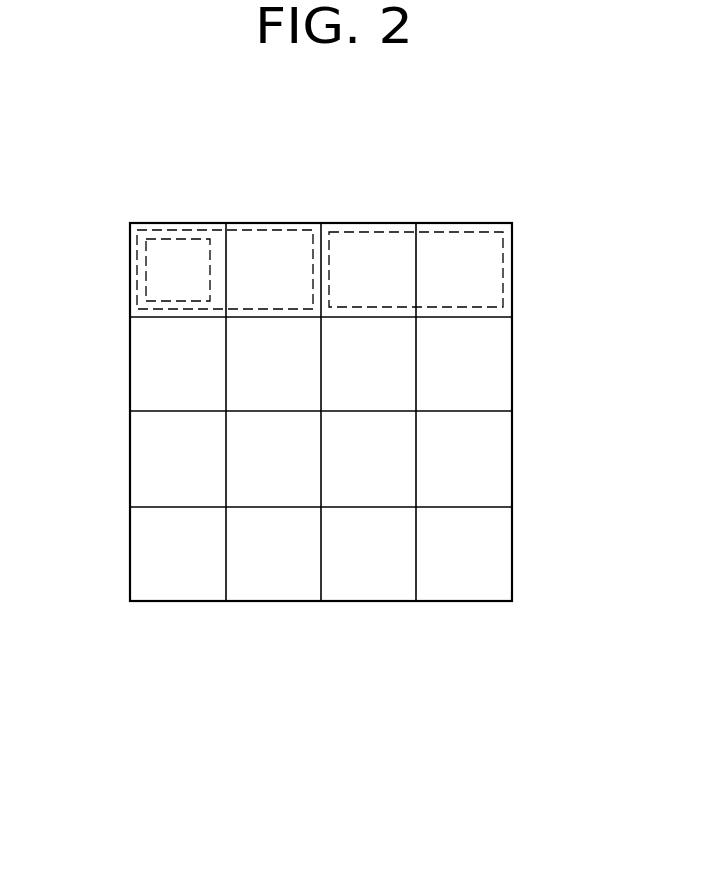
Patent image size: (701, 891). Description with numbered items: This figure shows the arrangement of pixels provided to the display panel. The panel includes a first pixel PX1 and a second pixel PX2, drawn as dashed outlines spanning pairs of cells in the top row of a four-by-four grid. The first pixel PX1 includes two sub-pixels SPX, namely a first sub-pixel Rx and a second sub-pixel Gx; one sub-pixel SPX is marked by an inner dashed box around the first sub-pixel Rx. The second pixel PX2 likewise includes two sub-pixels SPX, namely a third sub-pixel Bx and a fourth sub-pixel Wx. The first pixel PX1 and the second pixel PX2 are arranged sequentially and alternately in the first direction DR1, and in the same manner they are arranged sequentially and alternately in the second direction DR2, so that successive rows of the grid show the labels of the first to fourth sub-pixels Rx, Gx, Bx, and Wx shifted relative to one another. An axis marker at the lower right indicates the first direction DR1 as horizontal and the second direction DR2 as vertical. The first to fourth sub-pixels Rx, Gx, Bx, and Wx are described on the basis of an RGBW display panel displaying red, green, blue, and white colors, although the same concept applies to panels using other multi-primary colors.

The first pixel PX1 is at (137, 266).
The second pixel PX2 is at (503, 267).
The sub-pixel SPX is at (195, 239).
The first sub-pixel Rx is at (192, 288).
The second sub-pixel Gx is at (287, 288).
The third sub-pixel Bx is at (383, 288).
The fourth sub-pixel Wx is at (478, 288).
The first direction DR1 is at (448, 676).
The second direction DR2 is at (448, 676).